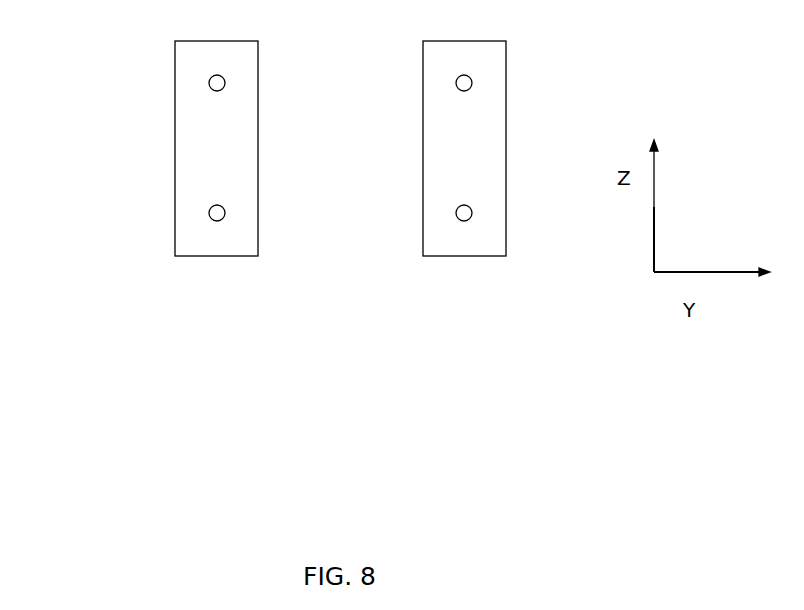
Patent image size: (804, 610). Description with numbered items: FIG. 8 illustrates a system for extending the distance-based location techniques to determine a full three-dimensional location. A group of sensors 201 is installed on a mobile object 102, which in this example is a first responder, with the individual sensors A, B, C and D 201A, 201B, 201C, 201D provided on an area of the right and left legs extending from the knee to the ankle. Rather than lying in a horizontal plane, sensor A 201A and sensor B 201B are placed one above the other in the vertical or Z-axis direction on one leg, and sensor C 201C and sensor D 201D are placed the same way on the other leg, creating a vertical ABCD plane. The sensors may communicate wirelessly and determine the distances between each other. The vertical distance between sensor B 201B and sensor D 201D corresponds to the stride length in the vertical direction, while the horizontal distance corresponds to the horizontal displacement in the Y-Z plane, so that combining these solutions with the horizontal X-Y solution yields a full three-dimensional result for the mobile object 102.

The mobile object 102 is at (460, 364).
The group of sensors 201 is at (339, 142).
The sensor A 201A is at (209, 75).
The sensor B 201B is at (209, 213).
The sensor C 201C is at (472, 77).
The sensor D 201D is at (472, 207).